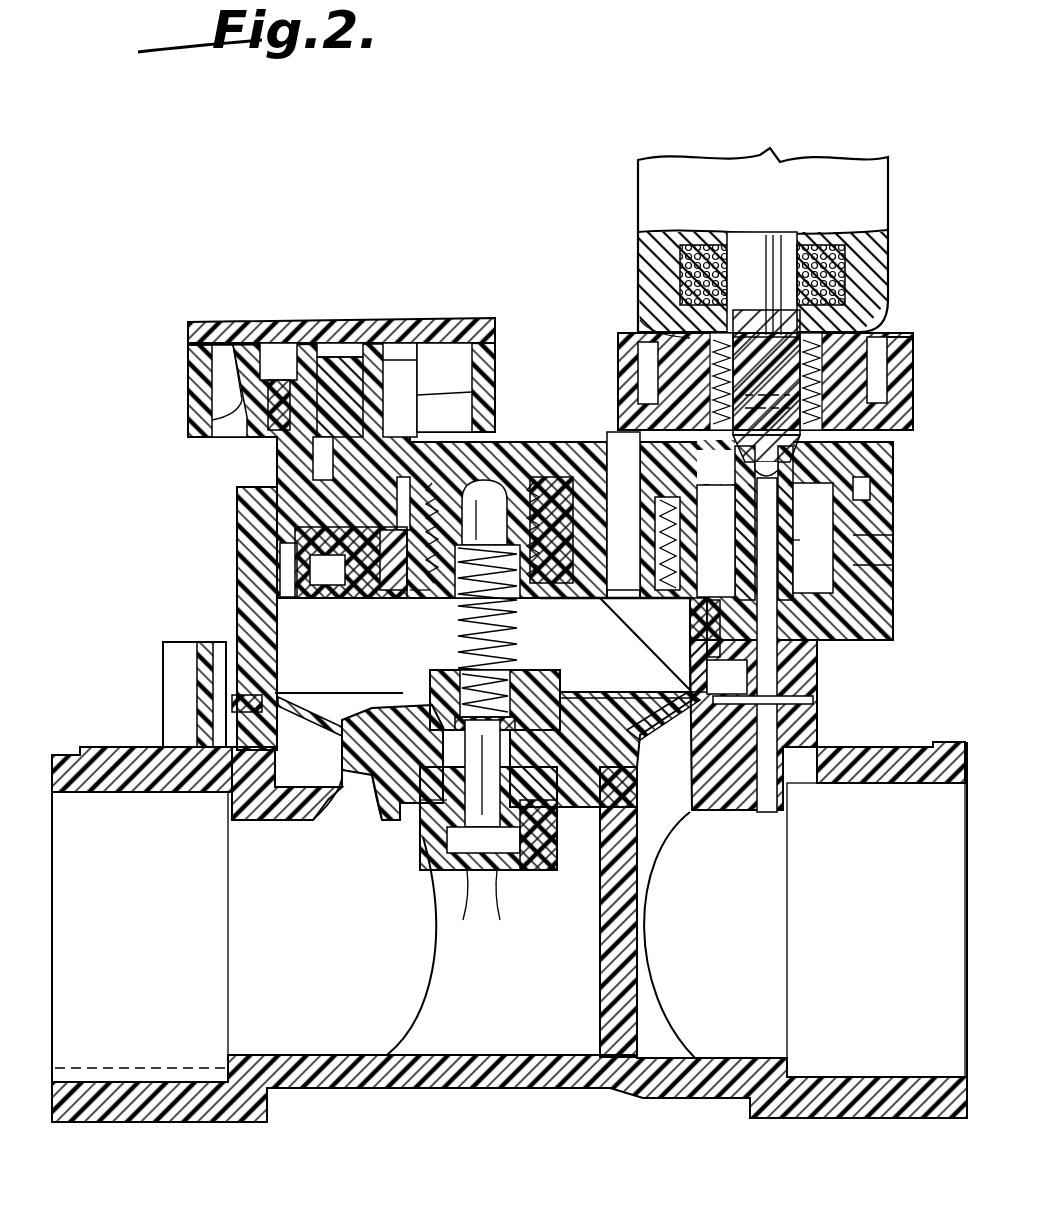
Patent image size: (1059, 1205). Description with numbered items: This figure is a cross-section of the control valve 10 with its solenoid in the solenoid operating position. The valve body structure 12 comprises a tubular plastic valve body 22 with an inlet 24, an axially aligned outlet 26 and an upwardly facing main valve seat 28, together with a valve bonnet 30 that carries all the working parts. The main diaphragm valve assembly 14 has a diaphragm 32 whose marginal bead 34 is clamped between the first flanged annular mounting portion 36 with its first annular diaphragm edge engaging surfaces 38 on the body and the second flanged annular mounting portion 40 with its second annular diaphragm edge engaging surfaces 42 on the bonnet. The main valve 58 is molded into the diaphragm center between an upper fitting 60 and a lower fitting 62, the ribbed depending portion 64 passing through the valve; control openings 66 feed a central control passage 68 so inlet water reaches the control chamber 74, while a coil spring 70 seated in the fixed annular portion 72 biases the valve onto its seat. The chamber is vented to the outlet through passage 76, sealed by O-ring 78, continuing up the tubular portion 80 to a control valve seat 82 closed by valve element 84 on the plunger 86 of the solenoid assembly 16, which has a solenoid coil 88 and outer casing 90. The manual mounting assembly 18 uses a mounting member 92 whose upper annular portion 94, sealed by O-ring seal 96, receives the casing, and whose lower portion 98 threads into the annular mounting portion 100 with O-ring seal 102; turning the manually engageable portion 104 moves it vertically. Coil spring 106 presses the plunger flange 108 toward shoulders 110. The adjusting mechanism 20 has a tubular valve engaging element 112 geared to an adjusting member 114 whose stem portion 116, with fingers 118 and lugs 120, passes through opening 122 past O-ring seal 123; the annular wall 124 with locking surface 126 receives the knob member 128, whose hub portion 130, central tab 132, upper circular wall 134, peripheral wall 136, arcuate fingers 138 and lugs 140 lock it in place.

The control valve 10 is at (192, 290).
The valve body structure 12 is at (240, 600).
The main diaphragm valve assembly 14 is at (400, 697).
The solenoid assembly 16 is at (630, 215).
The manual mounting assembly 18 is at (618, 372).
The adjusting mechanism 20 is at (480, 312).
The valve body 22 is at (392, 1088).
The inlet 24 is at (182, 1085).
The outlet 26 is at (848, 1085).
The main valve seat 28 is at (312, 818).
The valve bonnet 30 is at (240, 522).
The diaphragm 32 is at (665, 705).
The bead 34 is at (245, 712).
The first flanged annular mounting portion 36 is at (828, 718).
The first annular diaphragm edge engaging surfaces 38 is at (705, 720).
The second flanged annular mounting portion 40 is at (270, 668).
The second annular diaphragm edge engaging surfaces 42 is at (235, 692).
The main valve 58 is at (378, 806).
The upper fitting 60 is at (545, 690).
The lower fitting 62 is at (533, 870).
The ribbed depending portion 64 is at (440, 848).
The control openings 66 is at (485, 900).
The central control passage 68 is at (530, 822).
The coil spring 70 is at (462, 640).
The fixed annular portion 72 is at (448, 470).
The control chamber 74 is at (240, 632).
The passage 76 is at (785, 785).
The O-ring 78 is at (818, 693).
The tubular portion 80 is at (810, 539).
The control valve seat 82 is at (682, 575).
The valve element 84 is at (813, 538).
The plunger 86 is at (785, 248).
The solenoid coil 88 is at (712, 250).
The outer casing 90 is at (648, 265).
The mounting member 92 is at (612, 423).
The upper annular portion 94 is at (630, 348).
The O-ring seal 96 is at (640, 392).
The lower portion 98 is at (878, 542).
The annular mounting portion 100 is at (870, 560).
The O-ring seal 102 is at (872, 490).
The manually engageable portion 104 is at (890, 352).
The coil spring 106 is at (652, 322).
The flange 108 is at (722, 541).
The shoulders 110 is at (880, 405).
The tubular valve engaging element 112 is at (418, 592).
The adjusting member 114 is at (350, 600).
The stem portion 116 is at (320, 500).
The fingers 118 is at (350, 400).
The lugs 120 is at (262, 436).
The opening 122 is at (270, 490).
The O-ring seal 123 is at (282, 558).
The annular wall 124 is at (255, 420).
The annular locking surface 126 is at (248, 408).
The knob member 128 is at (188, 328).
The hub portion 130 is at (410, 345).
The central tab 132 is at (450, 372).
The upper circular wall 134 is at (222, 330).
The peripheral wall 136 is at (188, 362).
The arcuate fingers 138 is at (498, 340).
The lugs 140 is at (455, 400).